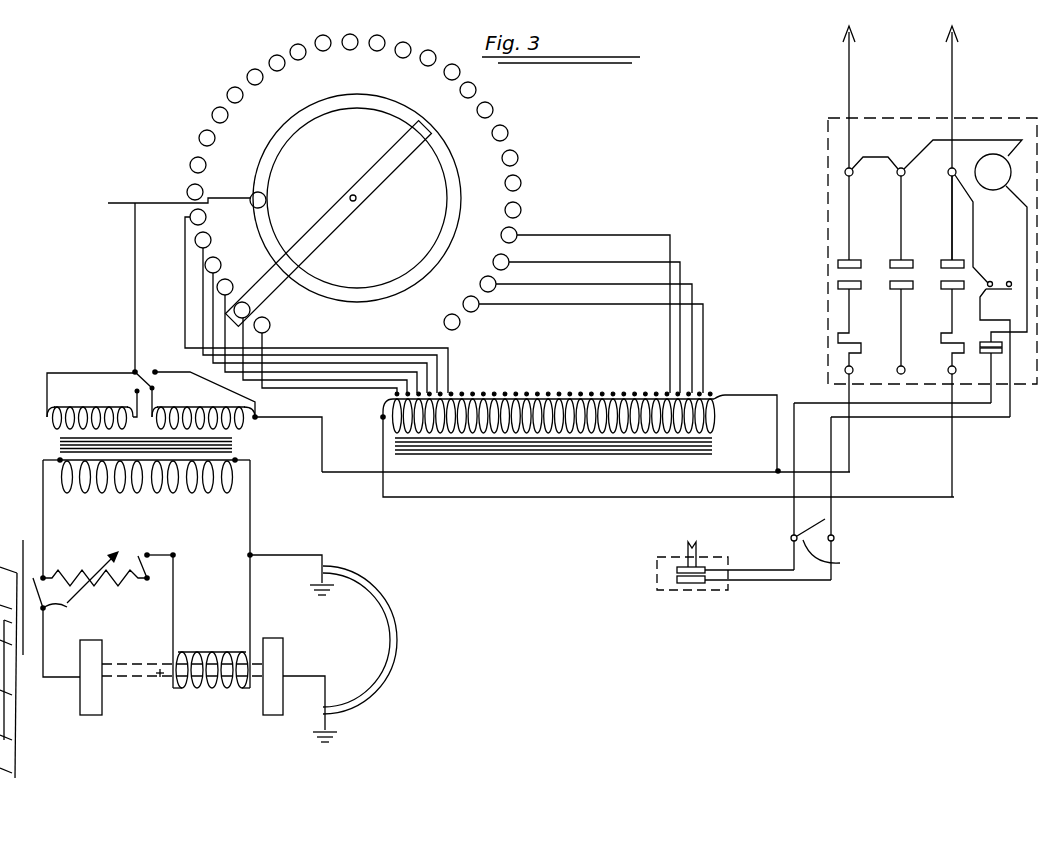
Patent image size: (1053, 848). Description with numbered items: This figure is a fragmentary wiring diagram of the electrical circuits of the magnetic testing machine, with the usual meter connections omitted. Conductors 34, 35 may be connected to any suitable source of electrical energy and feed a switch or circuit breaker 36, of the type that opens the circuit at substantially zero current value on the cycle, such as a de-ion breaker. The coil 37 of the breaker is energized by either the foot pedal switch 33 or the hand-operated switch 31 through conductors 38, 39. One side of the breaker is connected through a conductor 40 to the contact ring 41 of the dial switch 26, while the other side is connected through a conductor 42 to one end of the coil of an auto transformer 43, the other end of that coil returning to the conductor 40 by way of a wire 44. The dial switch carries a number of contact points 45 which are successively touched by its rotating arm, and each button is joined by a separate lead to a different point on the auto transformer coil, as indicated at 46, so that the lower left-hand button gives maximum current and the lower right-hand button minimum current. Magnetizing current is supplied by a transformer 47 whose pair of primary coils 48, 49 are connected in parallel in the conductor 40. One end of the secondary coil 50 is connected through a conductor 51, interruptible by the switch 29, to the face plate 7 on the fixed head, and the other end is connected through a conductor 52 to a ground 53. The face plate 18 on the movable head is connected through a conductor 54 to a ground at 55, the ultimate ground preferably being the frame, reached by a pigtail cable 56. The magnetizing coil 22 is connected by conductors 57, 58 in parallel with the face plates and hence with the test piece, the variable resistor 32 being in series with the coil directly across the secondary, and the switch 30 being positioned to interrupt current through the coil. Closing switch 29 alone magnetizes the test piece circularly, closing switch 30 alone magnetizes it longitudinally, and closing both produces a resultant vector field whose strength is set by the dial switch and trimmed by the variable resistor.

The face plate 7 is at (89, 712).
The face plate 18 is at (277, 703).
The magnetizing coil 22 is at (226, 652).
The dial switch 26 is at (322, 227).
The switch 29 is at (64, 605).
The switch 30 is at (149, 553).
The hand-operated switch 31 is at (830, 491).
The variable resistor 32 is at (88, 562).
The foot pedal switch 33 is at (694, 568).
The conductor 34 is at (872, 62).
The conductor 35 is at (952, 75).
The switch or circuit breaker 36 is at (882, 237).
The coil 37 is at (995, 188).
The conductor 38 is at (889, 404).
The conductor 39 is at (933, 418).
The conductor 40 is at (470, 510).
The contact ring 41 is at (452, 203).
The conductor 42 is at (596, 499).
The auto transformer 43 is at (535, 438).
The wire 44 is at (763, 394).
The contact points 45 is at (507, 138).
The leads 46 is at (425, 396).
The transformer 47 is at (48, 447).
The primary coil 48 is at (70, 411).
The primary coil 49 is at (183, 408).
The secondary coil 50 is at (177, 490).
The conductor 51 is at (42, 528).
The conductor 52 is at (253, 517).
The ground 53 is at (332, 592).
The conductor 54 is at (309, 675).
The ground 55 is at (338, 735).
The pigtail cable 56 is at (398, 652).
The conductor 57 is at (172, 612).
The conductor 58 is at (252, 606).